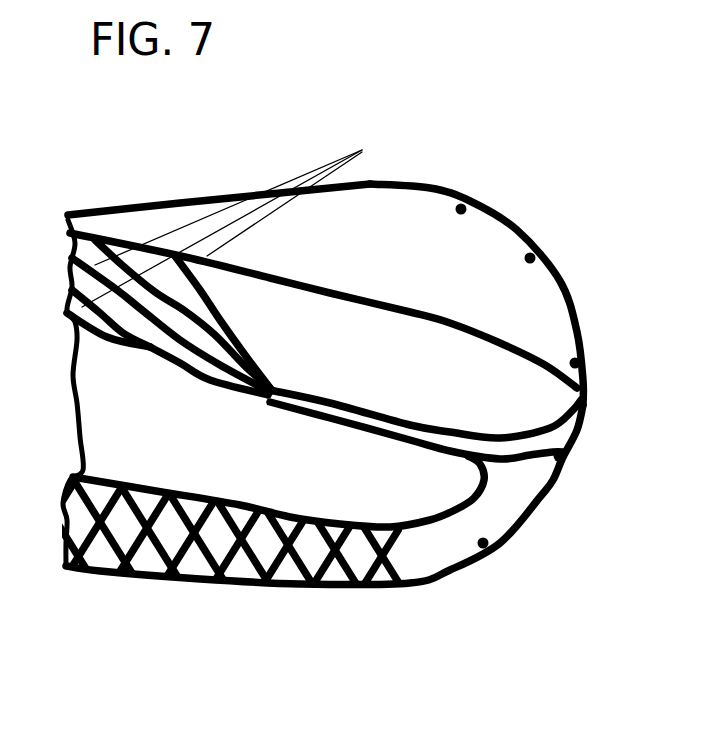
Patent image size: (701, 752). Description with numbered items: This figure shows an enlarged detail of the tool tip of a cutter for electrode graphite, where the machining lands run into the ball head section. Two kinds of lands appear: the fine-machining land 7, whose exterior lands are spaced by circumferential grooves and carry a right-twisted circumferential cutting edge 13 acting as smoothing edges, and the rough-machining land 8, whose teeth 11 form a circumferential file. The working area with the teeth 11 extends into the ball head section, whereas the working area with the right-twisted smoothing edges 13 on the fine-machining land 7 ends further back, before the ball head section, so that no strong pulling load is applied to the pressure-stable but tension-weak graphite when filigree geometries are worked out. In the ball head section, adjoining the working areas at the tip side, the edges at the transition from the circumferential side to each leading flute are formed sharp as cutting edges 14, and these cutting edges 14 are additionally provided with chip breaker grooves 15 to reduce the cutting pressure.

The fine-machining land 7 is at (373, 366).
The rough-machining land 8 is at (420, 592).
The teeth 11 is at (233, 546).
The circumferential cutting edge 13 is at (362, 150).
The cutting edges 14 is at (527, 237).
The chip breaker grooves 15 is at (503, 543).